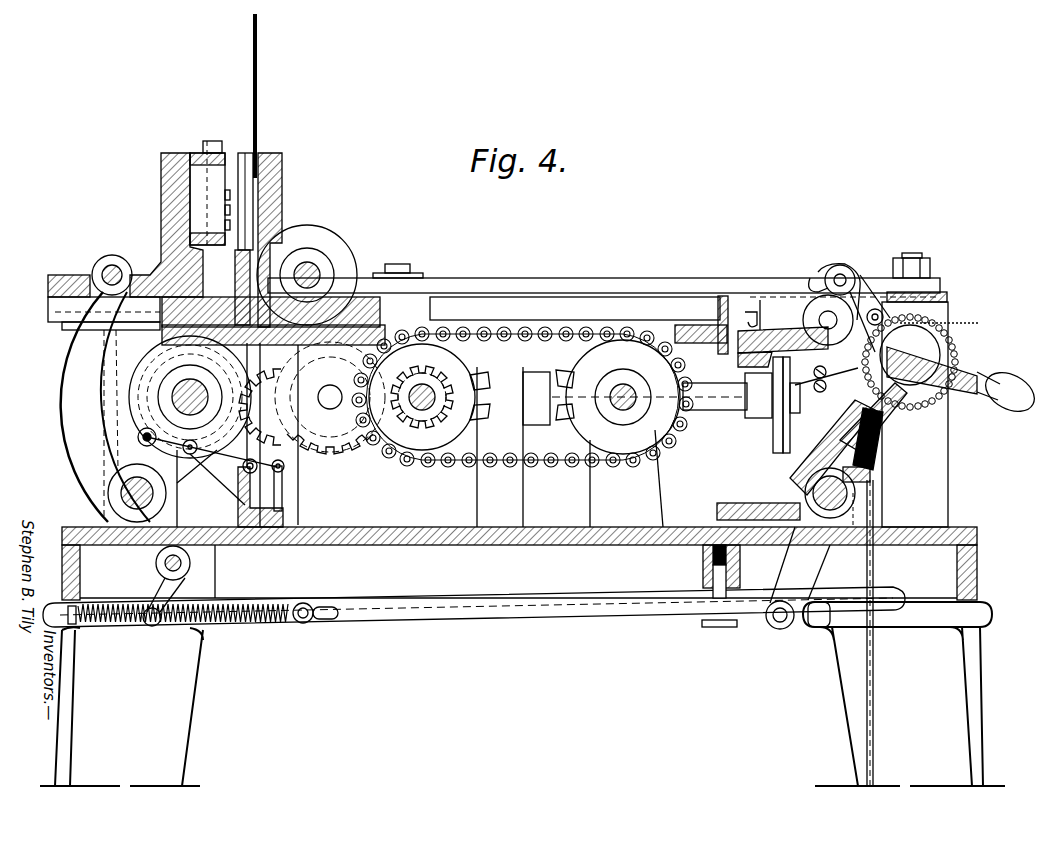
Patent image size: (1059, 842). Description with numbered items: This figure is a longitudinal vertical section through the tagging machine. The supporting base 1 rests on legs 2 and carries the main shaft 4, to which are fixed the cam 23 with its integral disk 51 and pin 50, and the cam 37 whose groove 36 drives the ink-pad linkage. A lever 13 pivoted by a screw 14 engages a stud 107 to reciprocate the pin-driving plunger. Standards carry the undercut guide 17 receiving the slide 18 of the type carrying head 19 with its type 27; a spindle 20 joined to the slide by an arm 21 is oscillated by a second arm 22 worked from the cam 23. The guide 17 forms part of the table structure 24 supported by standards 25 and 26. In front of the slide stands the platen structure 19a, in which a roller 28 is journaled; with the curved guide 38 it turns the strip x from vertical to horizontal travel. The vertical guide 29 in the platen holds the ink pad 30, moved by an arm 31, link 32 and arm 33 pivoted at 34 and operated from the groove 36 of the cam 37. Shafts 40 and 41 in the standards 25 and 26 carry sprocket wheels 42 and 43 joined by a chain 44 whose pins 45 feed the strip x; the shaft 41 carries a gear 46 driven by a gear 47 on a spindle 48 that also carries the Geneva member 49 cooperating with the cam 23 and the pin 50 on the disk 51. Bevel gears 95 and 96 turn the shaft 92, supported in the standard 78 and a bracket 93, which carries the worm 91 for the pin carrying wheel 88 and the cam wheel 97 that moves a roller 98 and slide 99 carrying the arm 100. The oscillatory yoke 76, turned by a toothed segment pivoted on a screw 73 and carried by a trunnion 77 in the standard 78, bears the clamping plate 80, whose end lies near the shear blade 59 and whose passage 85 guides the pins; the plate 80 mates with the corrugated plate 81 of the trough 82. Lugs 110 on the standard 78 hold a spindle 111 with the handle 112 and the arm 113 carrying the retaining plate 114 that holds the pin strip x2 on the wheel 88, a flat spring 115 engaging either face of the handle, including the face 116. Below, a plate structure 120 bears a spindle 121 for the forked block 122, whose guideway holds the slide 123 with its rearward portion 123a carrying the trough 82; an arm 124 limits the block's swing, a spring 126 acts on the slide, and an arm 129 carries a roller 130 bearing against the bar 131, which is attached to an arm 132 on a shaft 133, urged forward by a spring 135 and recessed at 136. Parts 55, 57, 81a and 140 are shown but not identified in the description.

The supporting base 1 is at (440, 551).
The legs or standards 2 is at (975, 648).
The main shaft 4 is at (188, 398).
The lever 13 is at (445, 278).
The screw 14 is at (400, 272).
The horizontally extending guide 17 is at (78, 306).
The reciprocable slide 18 is at (70, 274).
The type carrying head 19 is at (172, 152).
The strip guiding structure 19a is at (282, 185).
The third shaft or spindle 20 is at (118, 498).
The arm 21 is at (85, 393).
The second arm 22 is at (125, 386).
The cam 23 is at (135, 340).
The table structure 24 is at (698, 338).
The second pair of standards 25 is at (666, 480).
The intermediate pair of supporting standards 26 is at (392, 489).
The type 27 is at (205, 187).
The roller 28 is at (330, 236).
The vertical guide 29 is at (245, 152).
The pad 30 is at (235, 265).
The downwardly extending arm 31 is at (240, 502).
The link 32 is at (284, 494).
The arm 33 is at (222, 448).
The pivot 34 is at (140, 440).
The groove or channel 36 is at (140, 415).
The cam 37 is at (130, 368).
The curved guide 38 is at (282, 318).
The short horizontal shaft 40 is at (623, 410).
The short horizontal shaft 41 is at (420, 410).
The sprocket wheel 42 is at (585, 368).
The sprocket wheel 43 is at (465, 370).
The sprocket chain 44 is at (540, 326).
The pins 45 is at (428, 322).
The small gear 46 is at (428, 368).
The second gear 47 is at (265, 407).
The stud or short spindle 48 is at (330, 402).
The Geneva gear member 49 is at (253, 462).
The pin 50 is at (325, 304).
The disk 51 is at (30, 398).
The pivot 55 is at (190, 455).
The guide 57 is at (728, 300).
The shear blade 59 is at (742, 340).
The screw 73 is at (832, 369).
The oscillatory yoke 76 is at (746, 358).
The trunnion 77 is at (806, 312).
The second bracket or standard 78 is at (948, 493).
The plate 80 is at (776, 330).
The second plate 81 is at (968, 367).
The handle knob 81a is at (992, 372).
The shallow trough or box 82 is at (1005, 404).
The guiding passage 85 is at (758, 307).
The pin carrying wheel 88 is at (912, 405).
The worm 91 is at (805, 433).
The shaft 92 is at (713, 410).
The bracket 93 is at (570, 447).
The beveled gear 95 is at (412, 430).
The beveled gear 96 is at (480, 390).
The cam wheel 97 is at (556, 398).
The roller 98 is at (760, 398).
The slide 99 is at (776, 410).
The arm 100 is at (838, 392).
The stud 107 is at (915, 256).
The lugs 110 is at (842, 265).
The short spindle or pin 111 is at (844, 269).
The handle 112 is at (858, 300).
The arm 113 is at (864, 285).
The retaining plate 114 is at (935, 316).
The flat spring 115 is at (932, 288).
The second flat face 116 is at (810, 276).
The plate structure 120 is at (750, 502).
The spindle 121 is at (850, 496).
The forked block 122 is at (893, 430).
The slide 123 is at (880, 445).
The portion 123a is at (952, 394).
The downwardly projecting arm 124 is at (815, 478).
The spring 126 is at (872, 474).
The arm 129 is at (782, 565).
The roller 130 is at (778, 632).
The longitudinally movable bar 131 is at (446, 615).
The arm 132 is at (150, 580).
The shaft 133 is at (192, 563).
The spring 135 is at (110, 622).
The elongated recess 136 is at (812, 630).
The rod 140 is at (258, 62).
The strip x is at (258, 92).
The paper strip x2 is at (978, 323).